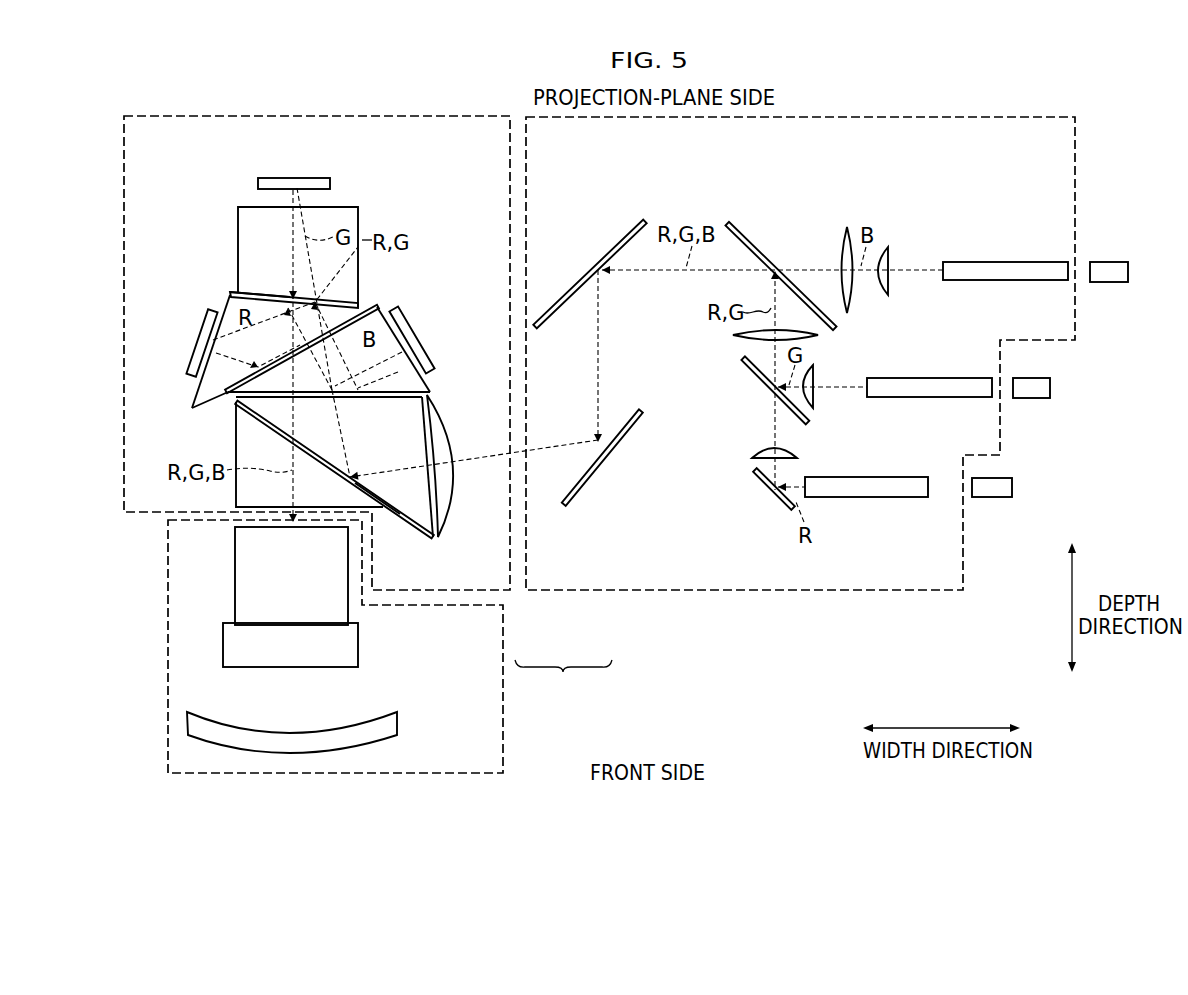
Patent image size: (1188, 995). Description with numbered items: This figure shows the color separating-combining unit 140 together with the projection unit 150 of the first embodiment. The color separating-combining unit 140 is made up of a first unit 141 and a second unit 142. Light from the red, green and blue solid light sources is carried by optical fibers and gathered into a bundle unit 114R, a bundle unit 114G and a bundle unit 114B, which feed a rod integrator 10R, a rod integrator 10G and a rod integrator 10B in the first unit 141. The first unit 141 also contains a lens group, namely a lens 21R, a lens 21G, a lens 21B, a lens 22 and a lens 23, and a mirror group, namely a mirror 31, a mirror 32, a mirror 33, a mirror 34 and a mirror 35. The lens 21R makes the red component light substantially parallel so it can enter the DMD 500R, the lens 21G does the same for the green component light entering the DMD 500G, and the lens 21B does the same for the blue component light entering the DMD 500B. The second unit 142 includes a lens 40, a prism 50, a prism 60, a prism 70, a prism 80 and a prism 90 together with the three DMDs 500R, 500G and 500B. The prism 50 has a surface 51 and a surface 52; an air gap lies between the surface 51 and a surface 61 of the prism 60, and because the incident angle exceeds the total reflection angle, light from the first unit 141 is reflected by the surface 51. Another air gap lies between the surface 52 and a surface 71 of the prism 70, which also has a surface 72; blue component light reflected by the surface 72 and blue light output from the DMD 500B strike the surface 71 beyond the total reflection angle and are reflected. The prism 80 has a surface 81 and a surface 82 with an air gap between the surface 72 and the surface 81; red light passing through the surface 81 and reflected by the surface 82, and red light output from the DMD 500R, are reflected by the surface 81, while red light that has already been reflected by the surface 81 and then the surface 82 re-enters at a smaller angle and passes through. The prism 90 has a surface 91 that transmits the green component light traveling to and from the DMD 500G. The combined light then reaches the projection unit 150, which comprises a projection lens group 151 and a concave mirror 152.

The DMD 500G is at (296, 178).
The DMD 500R is at (207, 326).
The DMD 500B is at (399, 328).
The prism 90 is at (238, 224).
The surface 91 is at (270, 295).
The surface 82 is at (232, 292).
The prism 80 is at (199, 388).
The surface 81 is at (198, 409).
The surface 72 is at (378, 306).
The prism 70 is at (418, 374).
The surface 71 is at (431, 393).
The surface 61 is at (262, 421).
The prism 60 is at (236, 496).
The surface 52 is at (383, 398).
The surface 51 is at (386, 512).
The prism 50 is at (429, 535).
The lens 40 is at (447, 532).
The projection lens group 151 is at (236, 580).
The concave mirror 152 is at (398, 714).
The projection unit 150 is at (503, 740).
The second unit 142 is at (508, 592).
The first unit 141 is at (593, 592).
The color separating-combining unit 140 is at (563, 677).
The mirror 34 is at (632, 231).
The mirror 33 is at (744, 233).
The mirror 35 is at (622, 413).
The lens 23 is at (847, 227).
The lens 21B is at (885, 248).
The rod integrator 10B is at (1014, 262).
The bundle unit 114B is at (1109, 262).
The lens 22 is at (737, 338).
The mirror 32 is at (748, 364).
The lens 21G is at (812, 372).
The rod integrator 10G is at (931, 397).
The bundle unit 114G is at (1032, 398).
The lens 21R is at (754, 453).
The mirror 31 is at (757, 488).
The rod integrator 10R is at (865, 497).
The bundle unit 114R is at (993, 497).